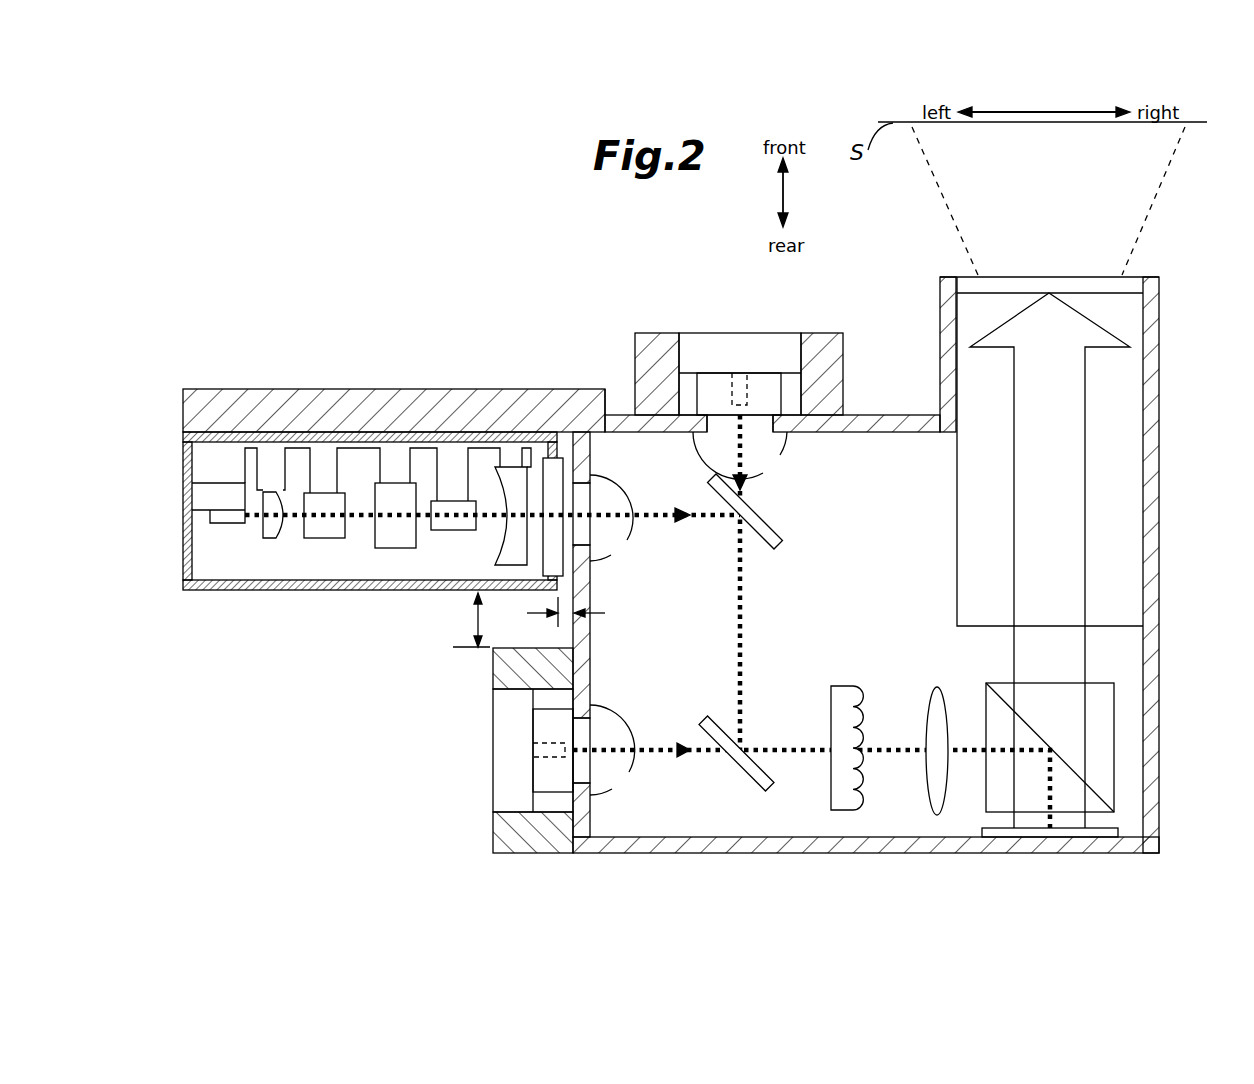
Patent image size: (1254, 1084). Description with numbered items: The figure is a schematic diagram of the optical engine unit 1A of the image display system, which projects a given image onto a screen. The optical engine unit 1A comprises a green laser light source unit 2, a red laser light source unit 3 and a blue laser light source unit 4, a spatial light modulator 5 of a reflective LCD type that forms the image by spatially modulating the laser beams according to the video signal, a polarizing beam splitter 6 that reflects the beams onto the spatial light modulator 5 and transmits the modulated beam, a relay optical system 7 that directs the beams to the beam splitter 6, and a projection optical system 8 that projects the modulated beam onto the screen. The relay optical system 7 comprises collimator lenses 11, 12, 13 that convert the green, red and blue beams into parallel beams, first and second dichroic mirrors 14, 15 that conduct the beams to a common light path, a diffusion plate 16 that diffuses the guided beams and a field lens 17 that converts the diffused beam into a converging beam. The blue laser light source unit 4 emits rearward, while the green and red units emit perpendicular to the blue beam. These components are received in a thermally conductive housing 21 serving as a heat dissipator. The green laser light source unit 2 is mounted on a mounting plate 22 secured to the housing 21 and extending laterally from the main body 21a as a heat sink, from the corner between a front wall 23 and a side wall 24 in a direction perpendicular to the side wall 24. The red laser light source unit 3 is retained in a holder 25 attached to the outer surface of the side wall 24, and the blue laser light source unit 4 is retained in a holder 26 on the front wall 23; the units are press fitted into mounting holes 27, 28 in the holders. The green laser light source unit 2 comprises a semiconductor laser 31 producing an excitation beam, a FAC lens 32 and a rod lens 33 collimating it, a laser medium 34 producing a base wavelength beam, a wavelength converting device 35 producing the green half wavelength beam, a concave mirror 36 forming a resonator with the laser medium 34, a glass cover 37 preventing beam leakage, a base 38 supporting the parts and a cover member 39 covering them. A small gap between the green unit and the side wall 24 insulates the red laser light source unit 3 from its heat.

The optical engine unit 1A is at (548, 343).
The green laser light source unit 2 is at (358, 593).
The red laser light source unit 3 is at (493, 786).
The blue laser light source unit 4 is at (716, 332).
The spatial light modulator 5 is at (1032, 838).
The polarizing beam splitter 6 is at (1115, 726).
The relay optical system 7 is at (806, 622).
The projection optical system 8 is at (957, 497).
The collimator lens 11 is at (623, 480).
The collimator lens 12 is at (623, 720).
The collimator lens 13 is at (757, 470).
The first dichroic mirror 14 is at (783, 546).
The second dichroic mirror 15 is at (745, 790).
The diffusion plate 16 is at (841, 686).
The field lens 17 is at (934, 687).
The housing 21 is at (760, 855).
The main body 21a is at (1160, 680).
The mounting plate 22 is at (393, 388).
The front wall 23 is at (875, 414).
The side wall 24 is at (592, 593).
The holder 25 is at (490, 835).
The holder 26 is at (820, 333).
The mounting hole 27 is at (510, 690).
The mounting hole 28 is at (800, 352).
The semiconductor laser 31 is at (228, 523).
The FAC lens 32 is at (272, 540).
The rod lens 33 is at (330, 540).
The laser medium 34 is at (395, 550).
The wavelength converting device 35 is at (455, 532).
The concave mirror 36 is at (510, 565).
The glass cover 37 is at (543, 492).
The base 38 is at (183, 528).
The cover member 39 is at (295, 592).